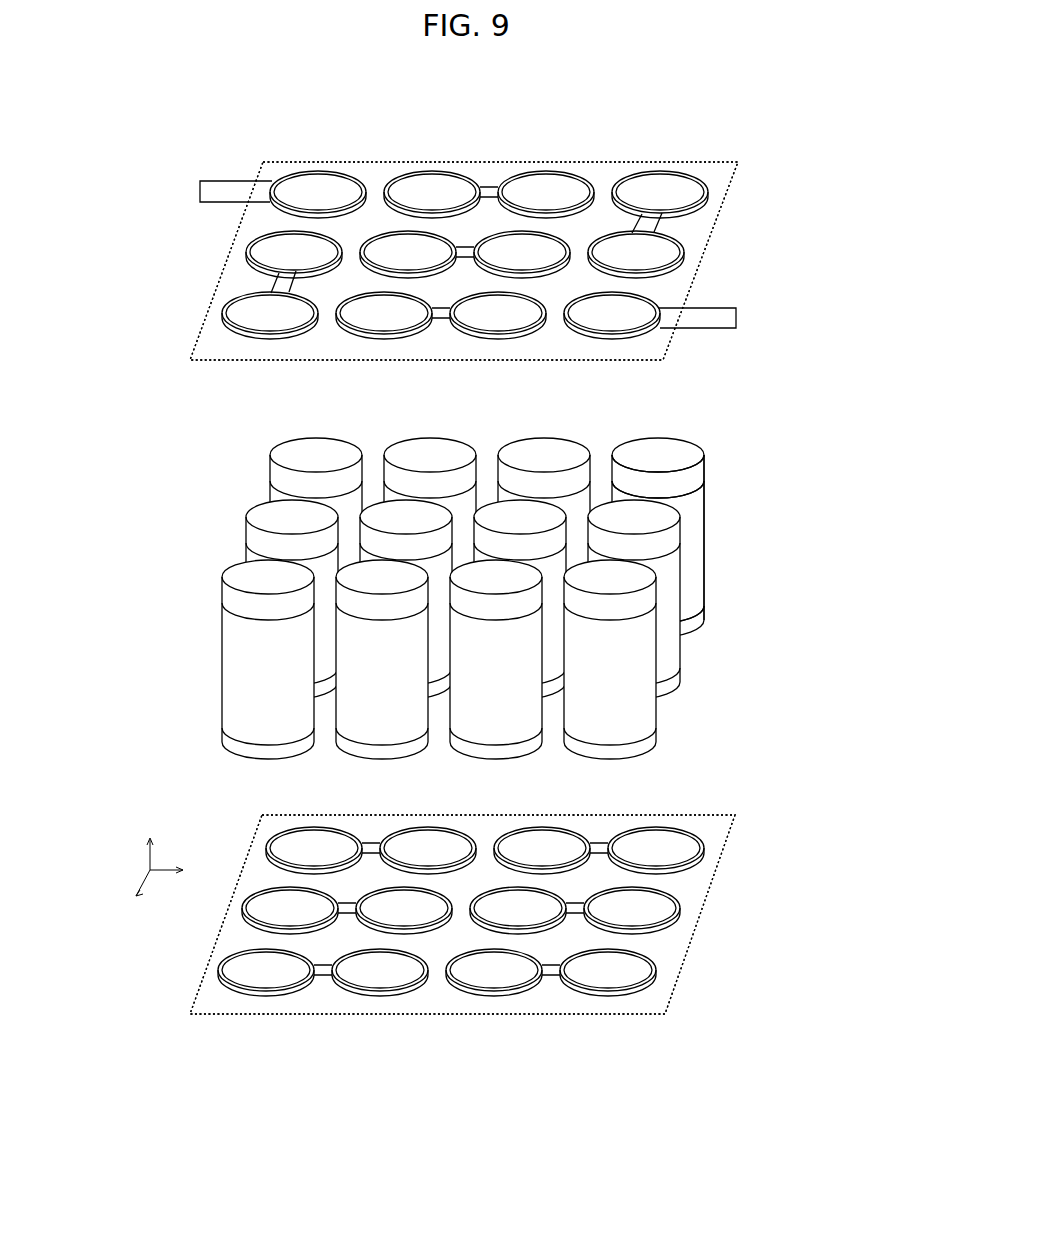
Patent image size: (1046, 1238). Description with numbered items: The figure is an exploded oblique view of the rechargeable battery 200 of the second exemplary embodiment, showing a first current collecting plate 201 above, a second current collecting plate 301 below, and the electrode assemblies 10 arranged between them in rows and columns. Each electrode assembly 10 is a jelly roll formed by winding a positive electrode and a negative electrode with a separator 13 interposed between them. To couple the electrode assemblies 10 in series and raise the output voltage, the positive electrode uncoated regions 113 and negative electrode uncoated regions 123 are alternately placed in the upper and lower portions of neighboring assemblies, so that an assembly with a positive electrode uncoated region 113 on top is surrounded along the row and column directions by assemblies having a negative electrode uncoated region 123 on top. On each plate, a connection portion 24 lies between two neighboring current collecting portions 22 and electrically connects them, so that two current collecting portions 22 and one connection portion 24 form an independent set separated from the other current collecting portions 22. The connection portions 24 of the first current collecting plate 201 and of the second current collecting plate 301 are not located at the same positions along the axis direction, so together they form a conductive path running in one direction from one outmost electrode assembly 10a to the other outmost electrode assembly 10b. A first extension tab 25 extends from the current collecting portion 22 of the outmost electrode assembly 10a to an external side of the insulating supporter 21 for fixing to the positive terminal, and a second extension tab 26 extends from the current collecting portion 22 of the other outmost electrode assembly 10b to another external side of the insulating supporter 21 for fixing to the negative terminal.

The rechargeable battery 200 is at (235, 90).
The first current collecting plate 201 is at (709, 160).
The second current collecting plate 301 is at (467, 1032).
The insulating supporter 21 is at (217, 281).
The current collecting portion 22 is at (318, 186).
The connection portion 24 is at (487, 189).
The first extension tab 25 is at (205, 190).
The second extension tab 26 is at (726, 318).
The electrode assembly 10 is at (446, 581).
The outmost electrode assembly 10a is at (272, 443).
The another outmost electrode assembly 10b is at (660, 715).
The separator 13 is at (230, 662).
The positive electrode uncoated region 113 is at (245, 600).
The negative electrode uncoated region 123 is at (240, 745).